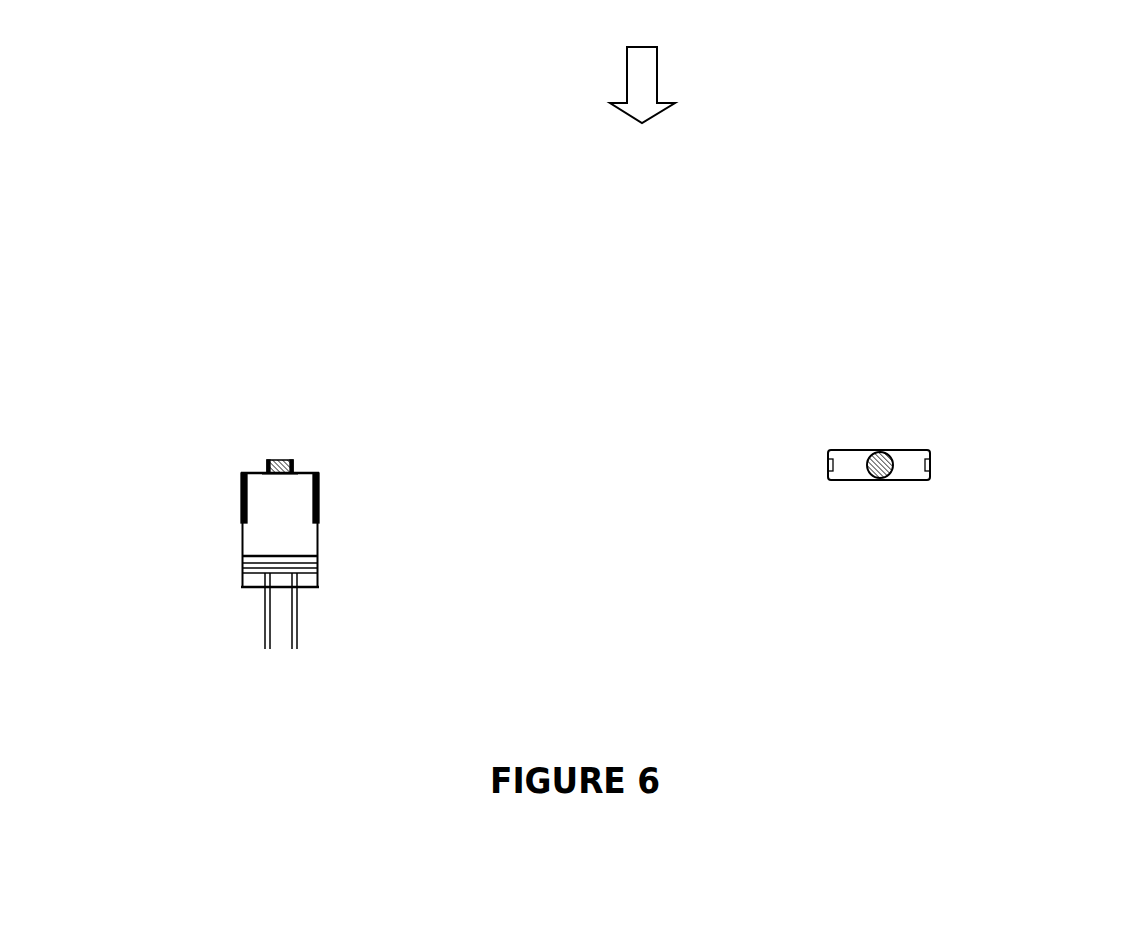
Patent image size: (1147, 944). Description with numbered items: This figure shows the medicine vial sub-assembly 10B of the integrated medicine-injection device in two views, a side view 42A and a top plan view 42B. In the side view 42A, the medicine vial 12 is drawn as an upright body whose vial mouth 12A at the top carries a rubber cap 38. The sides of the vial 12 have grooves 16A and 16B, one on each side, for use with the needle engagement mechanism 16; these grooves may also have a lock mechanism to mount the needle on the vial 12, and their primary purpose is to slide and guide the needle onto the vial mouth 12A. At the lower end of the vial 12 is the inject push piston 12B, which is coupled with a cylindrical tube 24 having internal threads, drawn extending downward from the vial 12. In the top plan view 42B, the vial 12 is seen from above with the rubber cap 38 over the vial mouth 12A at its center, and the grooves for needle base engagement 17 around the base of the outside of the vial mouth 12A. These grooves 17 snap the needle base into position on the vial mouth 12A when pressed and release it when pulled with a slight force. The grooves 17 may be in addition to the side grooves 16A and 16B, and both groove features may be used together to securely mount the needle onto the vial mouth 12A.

The sub-assembly 10B is at (669, 72).
The side view 42A is at (286, 335).
The top plan view 42B is at (912, 310).
The medicine vial 12 is at (320, 547).
The vial mouth 12A is at (256, 462).
The inject push piston 12B is at (241, 560).
The groove 16A is at (241, 497).
The groove 16B is at (320, 497).
The needle engagement mechanism 16 is at (828, 463).
The grooves for needle base engagement 17 is at (893, 478).
The cylindrical tube 24 is at (265, 612).
The rubber cap 38 is at (943, 412).